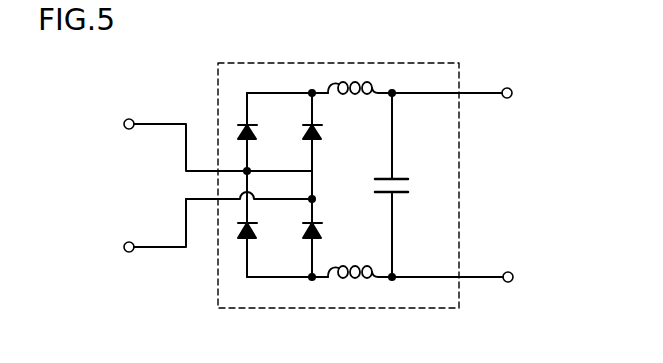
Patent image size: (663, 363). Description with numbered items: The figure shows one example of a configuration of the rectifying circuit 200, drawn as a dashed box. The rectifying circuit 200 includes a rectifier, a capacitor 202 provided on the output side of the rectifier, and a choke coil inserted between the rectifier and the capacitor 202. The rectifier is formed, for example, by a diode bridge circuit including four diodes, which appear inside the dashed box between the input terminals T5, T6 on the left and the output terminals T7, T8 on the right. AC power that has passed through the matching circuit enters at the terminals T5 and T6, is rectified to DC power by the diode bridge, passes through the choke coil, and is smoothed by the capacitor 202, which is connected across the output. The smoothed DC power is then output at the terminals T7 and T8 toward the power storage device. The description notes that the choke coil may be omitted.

The rectifying circuit 200 is at (340, 63).
The capacitor 202 is at (400, 175).
The input terminal T5 is at (124, 124).
The input terminal T6 is at (124, 247).
The output terminal T7 is at (512, 93).
The output terminal T8 is at (513, 277).